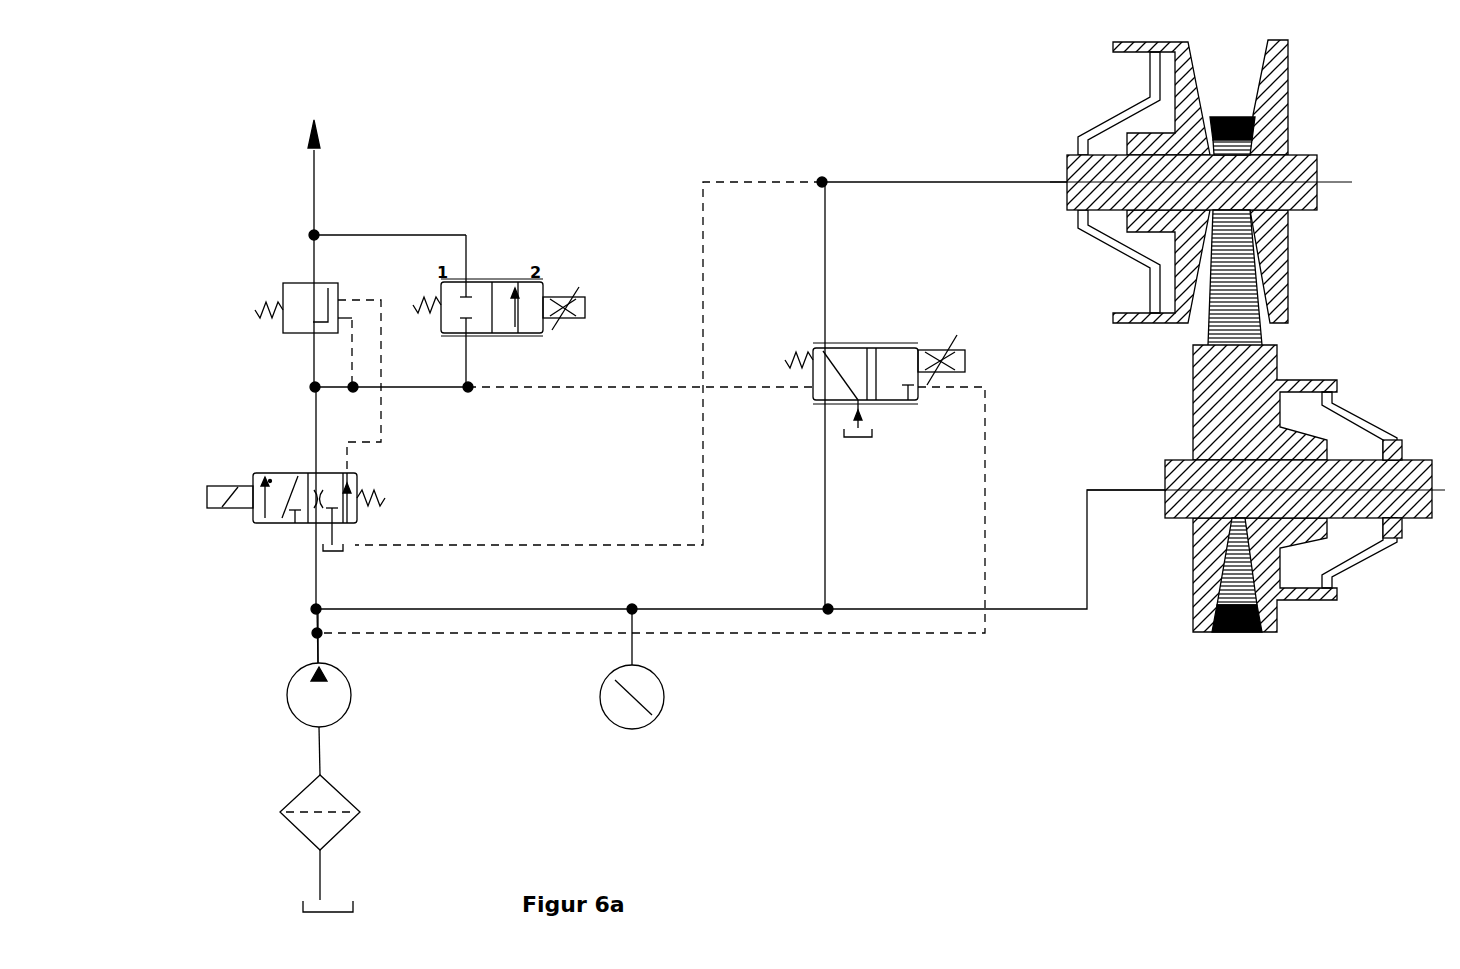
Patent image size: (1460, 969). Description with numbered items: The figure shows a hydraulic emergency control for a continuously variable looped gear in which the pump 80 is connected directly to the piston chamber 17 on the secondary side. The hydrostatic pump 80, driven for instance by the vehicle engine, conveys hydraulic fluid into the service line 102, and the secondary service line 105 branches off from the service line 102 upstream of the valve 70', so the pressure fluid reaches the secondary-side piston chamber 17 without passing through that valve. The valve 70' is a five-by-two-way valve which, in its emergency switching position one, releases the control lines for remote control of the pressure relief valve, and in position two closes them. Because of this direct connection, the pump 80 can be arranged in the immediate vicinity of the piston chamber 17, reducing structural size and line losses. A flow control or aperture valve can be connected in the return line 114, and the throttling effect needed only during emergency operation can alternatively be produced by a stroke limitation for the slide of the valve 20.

The 5/2-way valve 70' is at (246, 495).
The secondary service line 105 is at (425, 609).
The service line 102 is at (318, 647).
The hydrostatic pump 80 is at (312, 698).
The valve 20 is at (892, 358).
The return line 114 is at (887, 460).
The secondary-side piston chamber 17 is at (1325, 425).